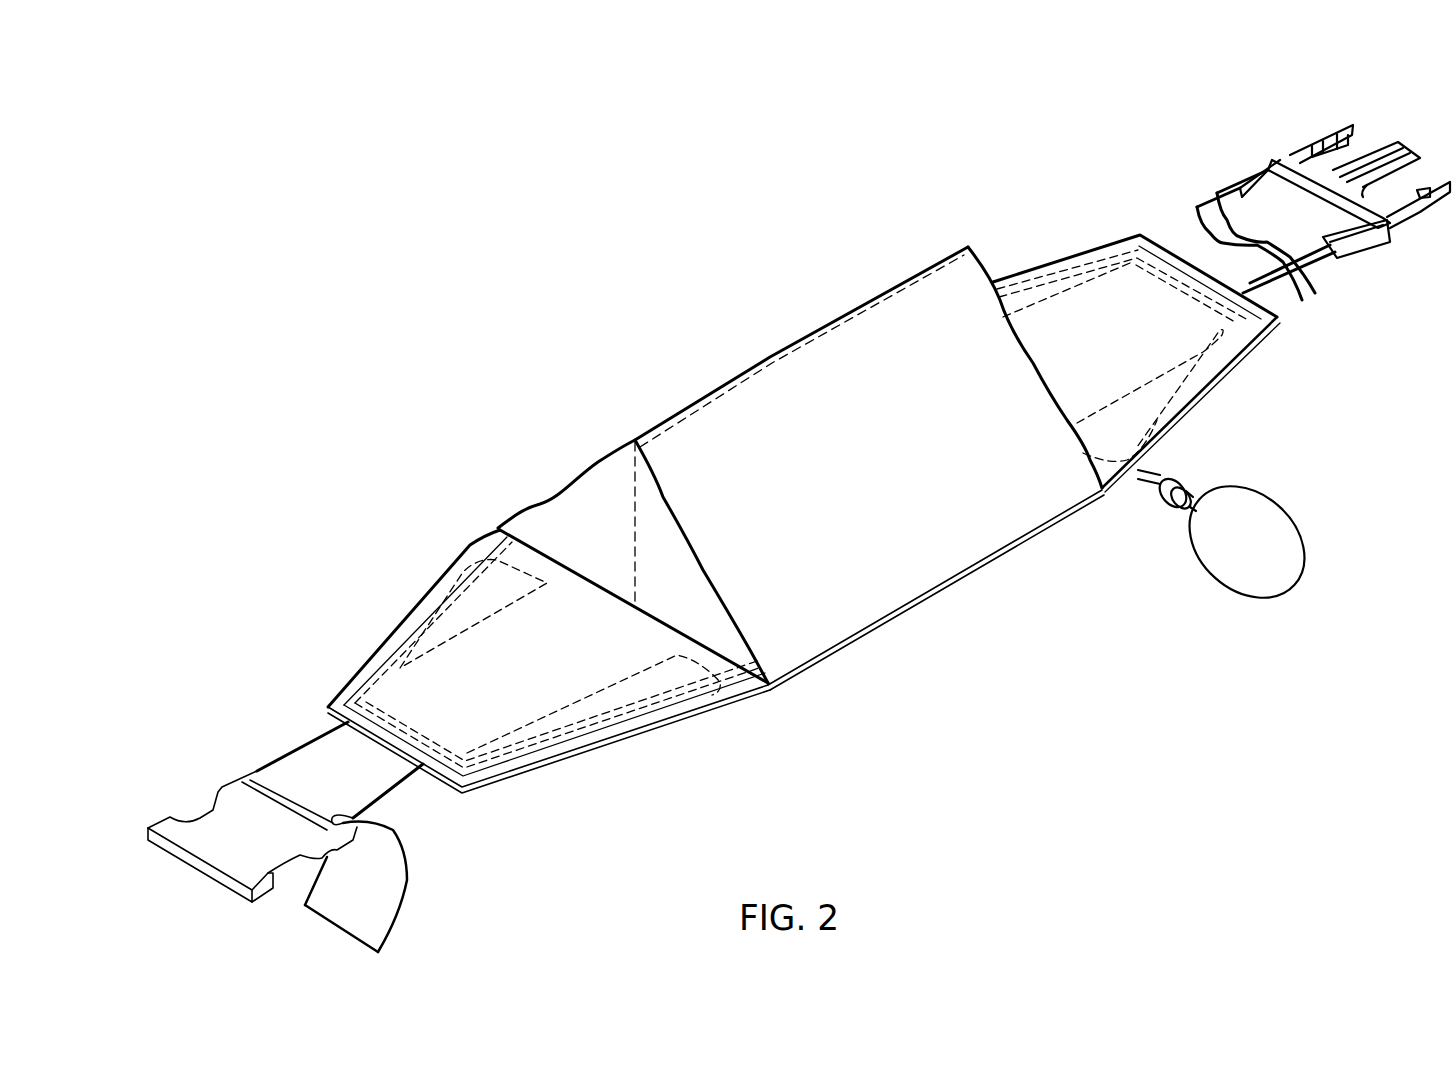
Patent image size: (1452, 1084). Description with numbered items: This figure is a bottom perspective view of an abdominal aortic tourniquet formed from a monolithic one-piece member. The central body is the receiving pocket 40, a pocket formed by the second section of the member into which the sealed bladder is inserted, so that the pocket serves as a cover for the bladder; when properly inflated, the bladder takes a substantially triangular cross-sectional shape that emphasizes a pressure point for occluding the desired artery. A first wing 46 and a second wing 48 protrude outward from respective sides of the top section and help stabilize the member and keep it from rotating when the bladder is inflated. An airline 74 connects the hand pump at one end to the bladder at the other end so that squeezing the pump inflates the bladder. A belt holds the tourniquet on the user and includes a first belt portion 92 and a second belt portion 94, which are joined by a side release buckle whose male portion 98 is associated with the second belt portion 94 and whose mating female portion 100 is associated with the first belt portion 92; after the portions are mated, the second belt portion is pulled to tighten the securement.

The receiving pocket 40 is at (879, 463).
The first wing 46 is at (623, 740).
The second wing 48 is at (1227, 373).
The airline 74 is at (1145, 480).
The first belt portion 92 is at (295, 762).
The second belt portion 94 is at (1263, 213).
The male portion 98 is at (1290, 112).
The female portion 100 is at (170, 800).